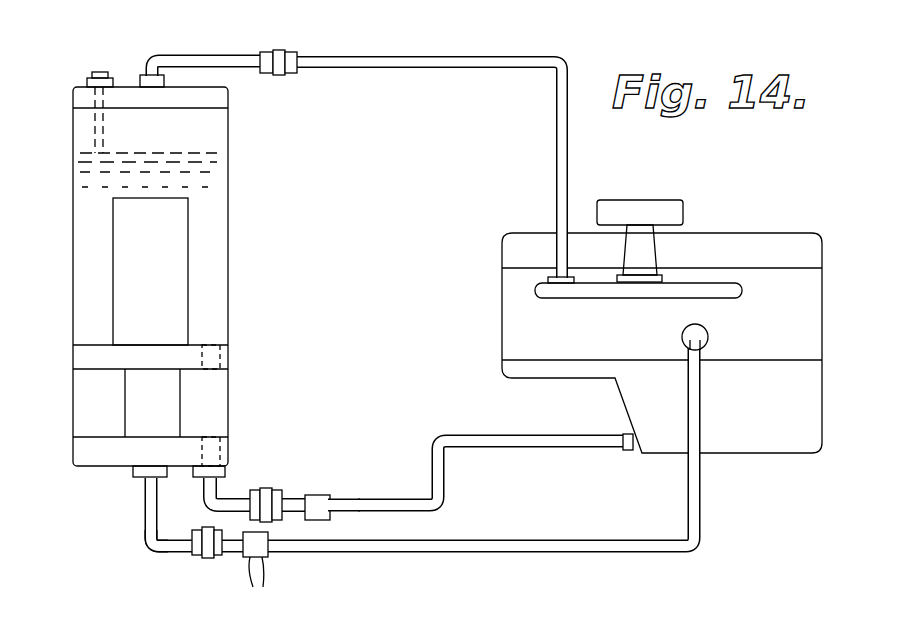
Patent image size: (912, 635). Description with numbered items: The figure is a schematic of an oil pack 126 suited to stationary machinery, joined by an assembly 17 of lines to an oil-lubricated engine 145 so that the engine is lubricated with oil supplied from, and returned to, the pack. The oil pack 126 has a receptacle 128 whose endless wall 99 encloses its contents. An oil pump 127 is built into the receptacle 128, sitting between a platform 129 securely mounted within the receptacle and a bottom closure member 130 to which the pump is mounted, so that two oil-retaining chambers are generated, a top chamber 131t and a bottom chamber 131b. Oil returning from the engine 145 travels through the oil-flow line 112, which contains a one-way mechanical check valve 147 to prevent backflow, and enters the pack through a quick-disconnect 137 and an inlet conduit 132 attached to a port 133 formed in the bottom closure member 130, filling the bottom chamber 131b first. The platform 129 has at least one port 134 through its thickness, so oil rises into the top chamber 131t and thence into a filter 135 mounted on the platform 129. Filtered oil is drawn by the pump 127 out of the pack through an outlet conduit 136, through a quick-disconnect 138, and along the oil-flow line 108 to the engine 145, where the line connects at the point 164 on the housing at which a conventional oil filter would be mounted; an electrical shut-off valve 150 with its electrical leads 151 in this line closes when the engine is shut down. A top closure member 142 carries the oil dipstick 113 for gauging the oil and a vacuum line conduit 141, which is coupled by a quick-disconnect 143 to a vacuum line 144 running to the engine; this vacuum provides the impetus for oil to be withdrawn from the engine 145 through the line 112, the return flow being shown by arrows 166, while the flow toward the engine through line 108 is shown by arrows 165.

The endless wall 99 is at (201, 266).
The oil dipstick 113 is at (113, 48).
The vacuum line conduit 141 is at (242, 56).
The quick-disconnect 143 is at (283, 50).
The vacuum line 144 is at (408, 58).
The top closure member 142 is at (223, 98).
The oil pack 126 is at (262, 152).
The assembly of lines 17 is at (488, 175).
The top chamber 131t is at (212, 206).
The filter 135 is at (190, 254).
The receptacle 128 is at (229, 302).
The port 134 is at (212, 343).
The platform 129 is at (82, 352).
The oil pump 127 is at (183, 405).
The port 133 is at (210, 438).
The bottom chamber 131b is at (82, 417).
The bottom closure member 130 is at (148, 527).
The outlet conduit 136 is at (151, 548).
The quick-disconnect 138 is at (205, 560).
The electrical leads 151 is at (243, 574).
The electrical shut-off valve 150 is at (273, 557).
The inlet conduit 132 is at (237, 493).
The quick-disconnect 137 is at (290, 494).
The one-way mechanical check valve 147 is at (323, 497).
The oil-flow line 108 is at (365, 548).
The oil-flow line 112 is at (488, 437).
The arrows 166 is at (505, 460).
The arrows 165 is at (548, 570).
The engine 145 is at (800, 193).
The conventional oil filter mounting point 164 is at (711, 333).